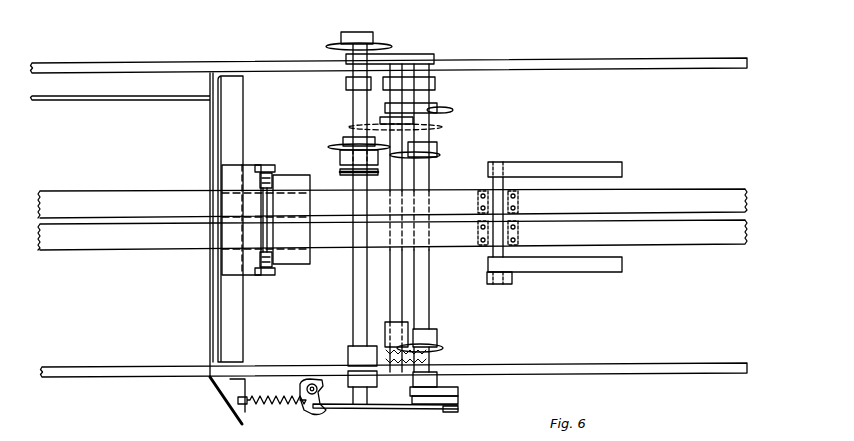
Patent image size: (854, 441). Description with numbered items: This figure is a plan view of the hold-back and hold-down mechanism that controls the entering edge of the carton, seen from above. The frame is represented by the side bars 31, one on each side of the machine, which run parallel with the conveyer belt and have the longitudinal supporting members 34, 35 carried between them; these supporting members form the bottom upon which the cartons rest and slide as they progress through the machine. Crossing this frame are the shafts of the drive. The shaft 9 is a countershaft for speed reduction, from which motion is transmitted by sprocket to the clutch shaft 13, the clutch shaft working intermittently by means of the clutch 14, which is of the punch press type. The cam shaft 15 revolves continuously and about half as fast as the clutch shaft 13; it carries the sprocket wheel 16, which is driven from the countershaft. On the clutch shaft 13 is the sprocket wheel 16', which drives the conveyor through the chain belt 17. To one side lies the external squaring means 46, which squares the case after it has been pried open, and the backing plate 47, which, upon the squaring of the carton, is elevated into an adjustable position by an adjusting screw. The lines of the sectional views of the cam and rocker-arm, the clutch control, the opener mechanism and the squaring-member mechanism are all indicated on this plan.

The shaft 9 is at (398, 252).
The clutch shaft 13 is at (362, 269).
The clutch 14 is at (353, 165).
The cam shaft 15 is at (323, 159).
The sprocket wheel 16 is at (347, 272).
The sprocket wheel 16' is at (371, 35).
The chain belt 17 is at (372, 306).
The side bars 31 is at (480, 60).
The longitudinal supporting member 34 is at (663, 199).
The longitudinal supporting member 35 is at (668, 235).
The external squaring means 46 is at (568, 164).
The backing plate 47 is at (292, 259).